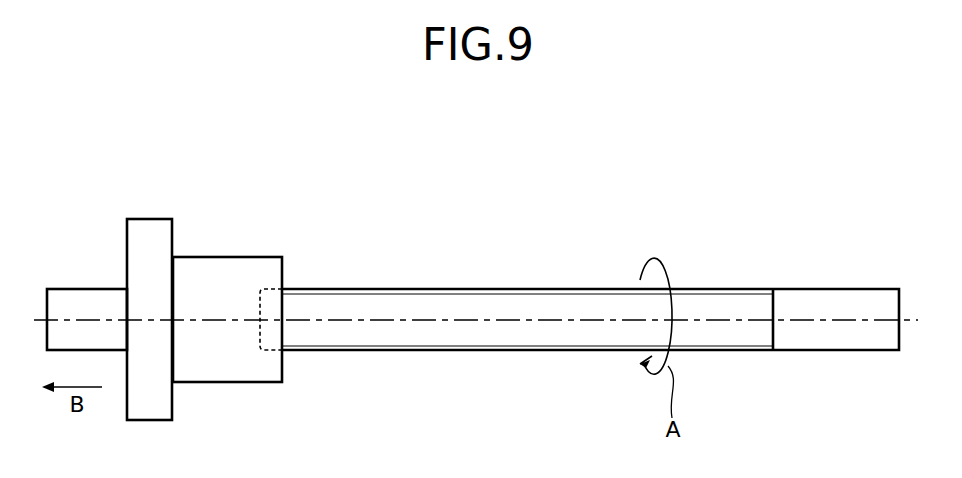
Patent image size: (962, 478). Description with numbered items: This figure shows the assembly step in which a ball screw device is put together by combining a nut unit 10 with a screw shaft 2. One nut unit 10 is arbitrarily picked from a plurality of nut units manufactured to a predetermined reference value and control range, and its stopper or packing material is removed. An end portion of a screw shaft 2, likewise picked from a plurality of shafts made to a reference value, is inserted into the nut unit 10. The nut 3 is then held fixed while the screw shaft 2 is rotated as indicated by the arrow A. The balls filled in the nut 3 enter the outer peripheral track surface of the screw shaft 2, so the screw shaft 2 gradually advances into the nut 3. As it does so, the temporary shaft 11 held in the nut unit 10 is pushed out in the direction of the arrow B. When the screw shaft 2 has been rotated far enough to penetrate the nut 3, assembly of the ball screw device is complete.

The screw shaft 2 is at (578, 269).
The nut 3 is at (210, 242).
The nut unit 10 is at (275, 214).
The temporary shaft 11 is at (82, 297).